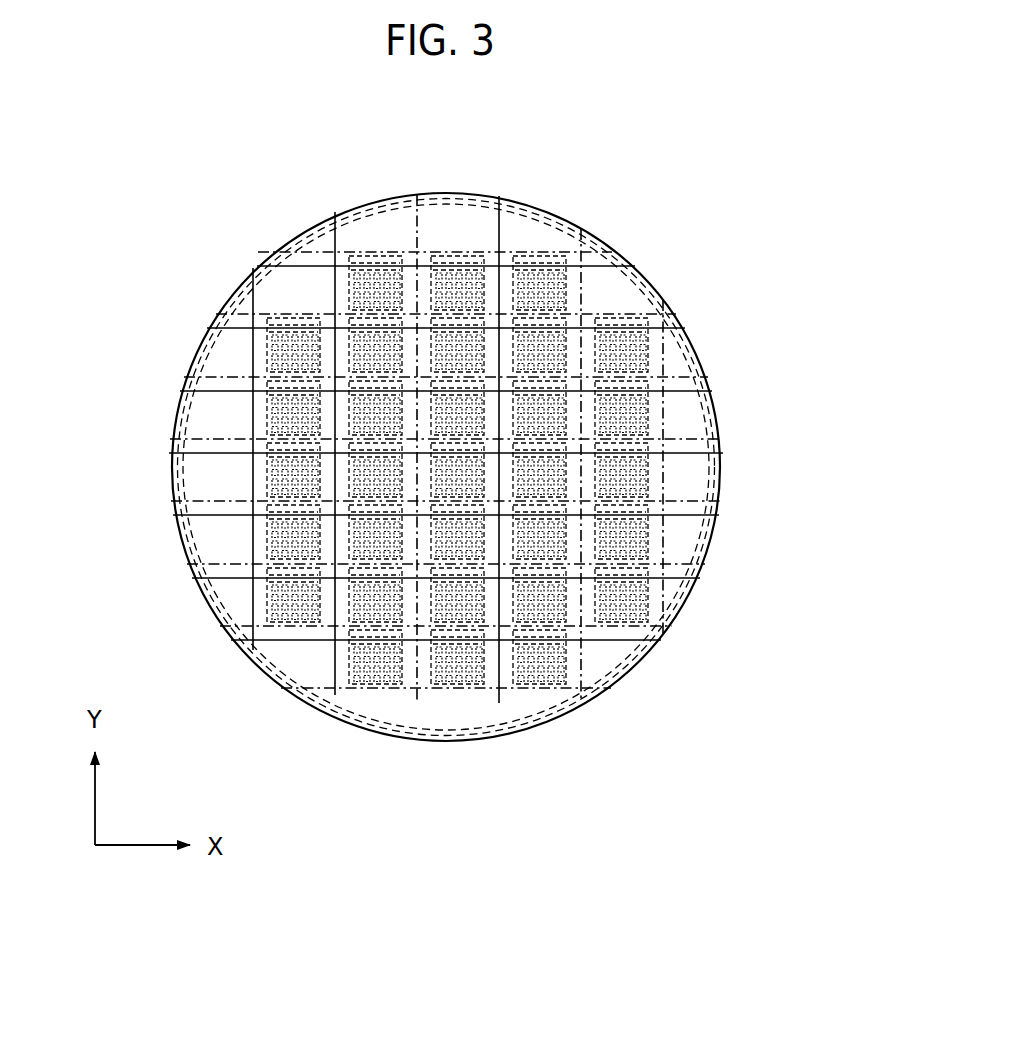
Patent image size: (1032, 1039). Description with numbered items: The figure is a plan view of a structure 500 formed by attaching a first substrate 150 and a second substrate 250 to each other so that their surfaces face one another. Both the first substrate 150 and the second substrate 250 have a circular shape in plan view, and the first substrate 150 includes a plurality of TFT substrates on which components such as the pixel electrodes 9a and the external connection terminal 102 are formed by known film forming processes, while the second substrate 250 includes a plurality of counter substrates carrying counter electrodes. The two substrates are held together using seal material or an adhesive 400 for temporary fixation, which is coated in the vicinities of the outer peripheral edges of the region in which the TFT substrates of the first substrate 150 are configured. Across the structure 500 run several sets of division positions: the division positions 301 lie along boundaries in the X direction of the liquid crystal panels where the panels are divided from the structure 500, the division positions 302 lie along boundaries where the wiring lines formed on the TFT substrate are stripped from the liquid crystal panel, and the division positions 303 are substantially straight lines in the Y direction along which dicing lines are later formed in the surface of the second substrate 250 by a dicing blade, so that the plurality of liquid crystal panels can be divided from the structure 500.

The structure 500 is at (521, 467).
The first substrate 150 is at (521, 467).
The second substrate 250 is at (654, 281).
The external connection terminal 102 is at (677, 322).
The adhesive 400 is at (717, 470).
The pixel electrode 9a is at (654, 352).
The division positions 301 is at (618, 312).
The division positions 302 is at (298, 273).
The division positions 303 is at (258, 285).